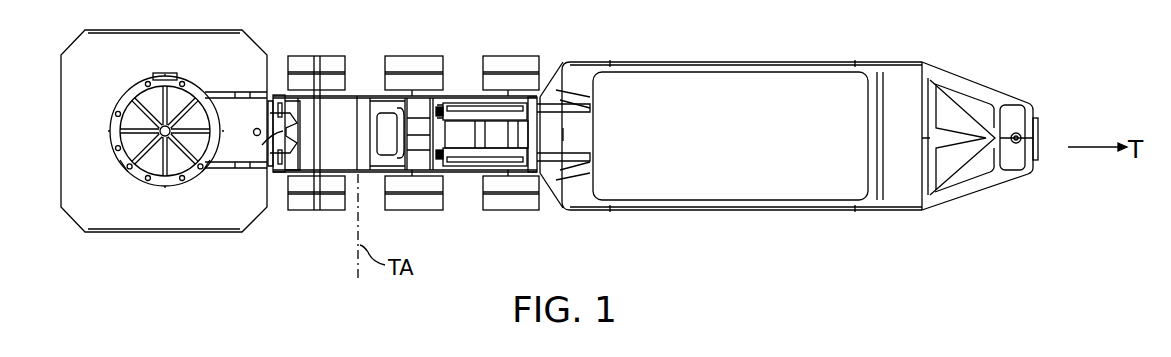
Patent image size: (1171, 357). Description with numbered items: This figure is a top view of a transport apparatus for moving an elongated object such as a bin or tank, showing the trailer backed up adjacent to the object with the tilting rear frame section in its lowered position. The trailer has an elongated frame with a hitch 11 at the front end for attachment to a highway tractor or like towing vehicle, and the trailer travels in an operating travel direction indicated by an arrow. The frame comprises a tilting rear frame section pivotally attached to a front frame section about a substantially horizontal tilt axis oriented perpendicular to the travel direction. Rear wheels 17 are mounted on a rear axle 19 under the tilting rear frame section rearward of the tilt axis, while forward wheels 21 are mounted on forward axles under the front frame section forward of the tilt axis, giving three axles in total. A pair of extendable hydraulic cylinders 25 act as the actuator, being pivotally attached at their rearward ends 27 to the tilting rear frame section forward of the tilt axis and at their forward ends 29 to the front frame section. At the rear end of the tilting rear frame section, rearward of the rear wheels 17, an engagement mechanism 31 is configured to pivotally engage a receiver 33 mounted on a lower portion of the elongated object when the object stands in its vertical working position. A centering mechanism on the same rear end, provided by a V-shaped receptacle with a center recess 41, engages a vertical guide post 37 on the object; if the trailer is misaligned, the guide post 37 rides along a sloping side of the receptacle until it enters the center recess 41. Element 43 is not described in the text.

The hitch 11 is at (1041, 128).
The rear wheels 17 is at (311, 211).
The rear axle 19 is at (323, 131).
The forward wheels 21 is at (410, 211).
The extendable hydraulic cylinders 25 is at (490, 145).
The rearward ends 27 is at (455, 97).
The forward ends 29 is at (590, 137).
The engagement mechanism 31 is at (276, 94).
The receiver 33 is at (258, 91).
The vertical guide post 37 is at (254, 135).
The center recess 41 is at (263, 150).
The hitch plate 43 is at (272, 180).